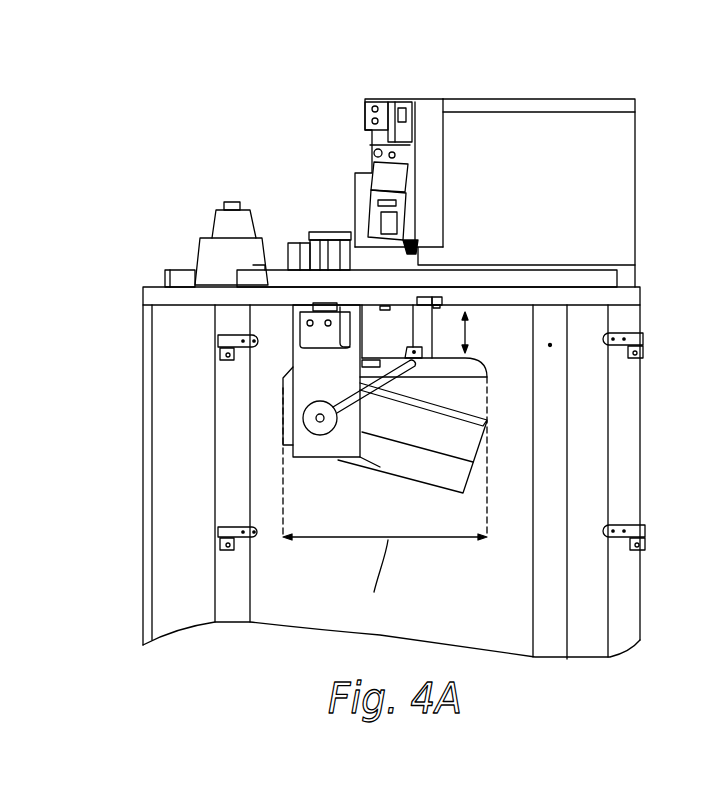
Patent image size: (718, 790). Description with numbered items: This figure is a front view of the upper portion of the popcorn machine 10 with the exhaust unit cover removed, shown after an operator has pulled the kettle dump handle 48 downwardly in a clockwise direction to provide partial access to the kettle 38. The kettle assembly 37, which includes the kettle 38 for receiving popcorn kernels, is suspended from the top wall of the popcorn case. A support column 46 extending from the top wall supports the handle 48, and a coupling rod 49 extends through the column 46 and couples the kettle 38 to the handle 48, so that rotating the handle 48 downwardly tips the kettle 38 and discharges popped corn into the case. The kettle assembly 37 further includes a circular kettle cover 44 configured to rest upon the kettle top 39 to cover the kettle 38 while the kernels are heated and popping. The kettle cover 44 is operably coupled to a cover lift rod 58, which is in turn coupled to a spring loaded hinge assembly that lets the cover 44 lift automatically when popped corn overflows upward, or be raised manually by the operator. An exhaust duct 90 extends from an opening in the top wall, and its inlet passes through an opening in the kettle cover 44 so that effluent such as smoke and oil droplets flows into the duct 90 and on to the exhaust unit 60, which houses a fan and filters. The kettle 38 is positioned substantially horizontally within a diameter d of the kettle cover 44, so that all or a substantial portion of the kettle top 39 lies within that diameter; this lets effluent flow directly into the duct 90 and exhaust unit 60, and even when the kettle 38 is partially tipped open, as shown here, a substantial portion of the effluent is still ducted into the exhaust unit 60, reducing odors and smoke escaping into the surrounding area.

The popcorn machine 10 is at (175, 185).
The exhaust unit 60 is at (530, 97).
The support column 46 is at (293, 342).
The kettle dump handle 48 is at (313, 402).
The coupling rod 49 is at (320, 424).
The exhaust duct 90 is at (437, 300).
The cover lift rod 58 is at (416, 345).
The kettle cover 44 is at (489, 371).
The kettle assembly 37 is at (500, 398).
The kettle top 39 is at (490, 423).
The kettle 38 is at (490, 448).